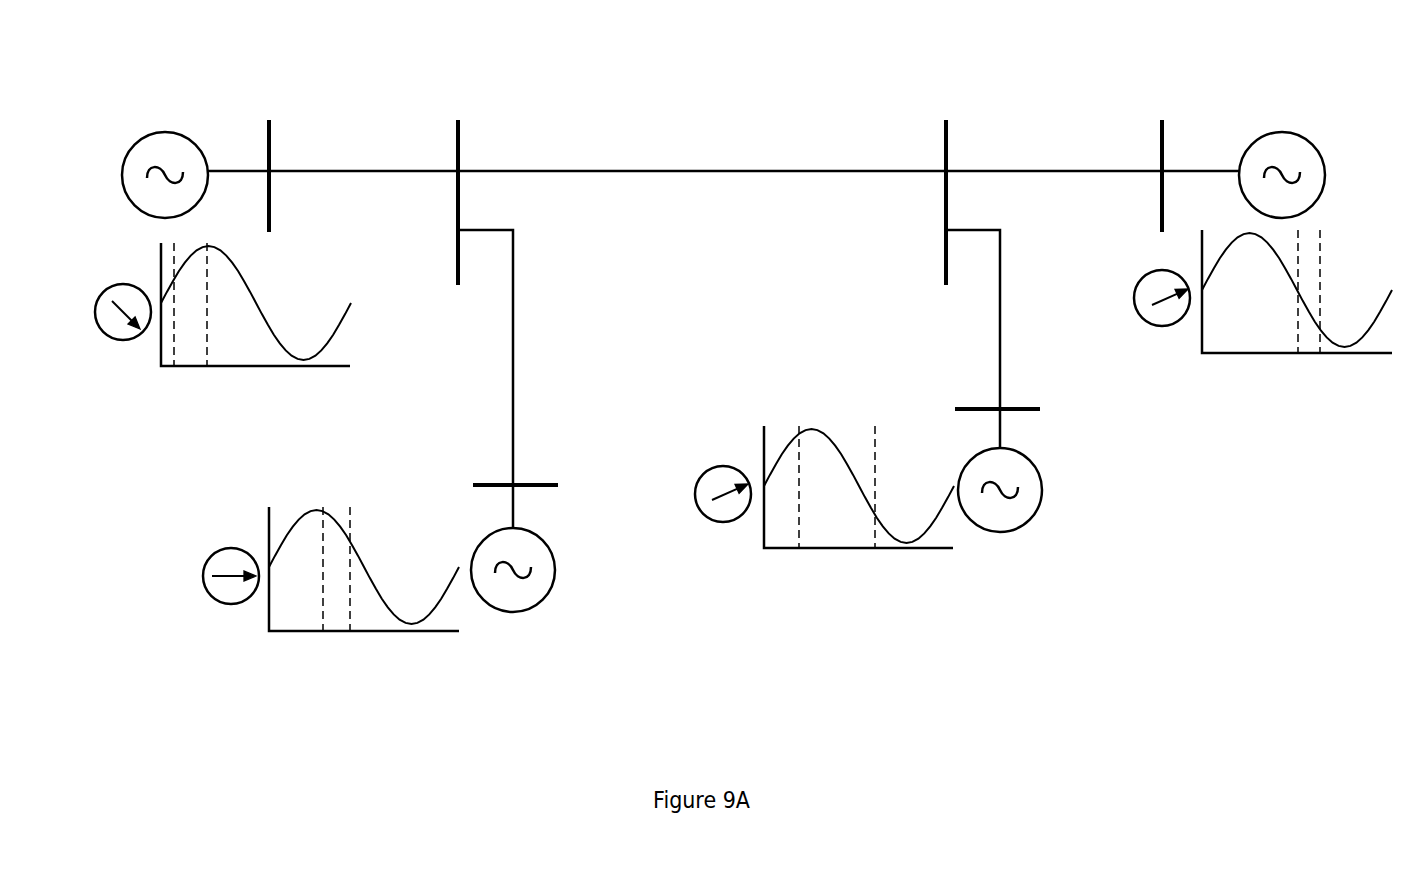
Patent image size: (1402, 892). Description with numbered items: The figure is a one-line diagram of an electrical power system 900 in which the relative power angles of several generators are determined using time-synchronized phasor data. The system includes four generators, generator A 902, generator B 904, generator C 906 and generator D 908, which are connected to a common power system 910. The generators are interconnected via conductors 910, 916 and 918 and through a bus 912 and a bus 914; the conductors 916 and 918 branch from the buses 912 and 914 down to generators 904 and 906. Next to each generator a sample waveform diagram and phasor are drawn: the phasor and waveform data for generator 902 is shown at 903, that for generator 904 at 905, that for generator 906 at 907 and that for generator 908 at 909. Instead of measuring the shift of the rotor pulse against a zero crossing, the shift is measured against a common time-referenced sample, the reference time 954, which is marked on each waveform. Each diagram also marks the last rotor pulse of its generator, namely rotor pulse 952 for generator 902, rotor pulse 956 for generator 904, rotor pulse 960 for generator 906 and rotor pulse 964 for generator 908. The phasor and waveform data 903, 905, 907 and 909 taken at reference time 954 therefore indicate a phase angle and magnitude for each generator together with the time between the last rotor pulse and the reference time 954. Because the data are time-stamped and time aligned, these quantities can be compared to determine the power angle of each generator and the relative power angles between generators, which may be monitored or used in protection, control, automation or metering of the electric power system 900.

The electrical power system 900 is at (1327, 619).
The generator 902 is at (163, 132).
The phasor and waveform data 903 is at (126, 376).
The generator 904 is at (540, 533).
The phasor and waveform data 905 is at (244, 644).
The generator 906 is at (1030, 457).
The phasor and waveform data 907 is at (738, 566).
The generator 908 is at (1283, 132).
The phasor and waveform data 909 is at (1182, 362).
The common power system conductor 910 is at (617, 171).
The bus 912 is at (460, 137).
The bus 914 is at (948, 137).
The conductor 916 is at (514, 275).
The conductor 918 is at (1000, 272).
The rotor pulse 952 is at (174, 366).
The reference time 954 is at (207, 367).
The rotor pulse 956 is at (323, 632).
The rotor pulse 960 is at (799, 549).
The rotor pulse 964 is at (1298, 354).